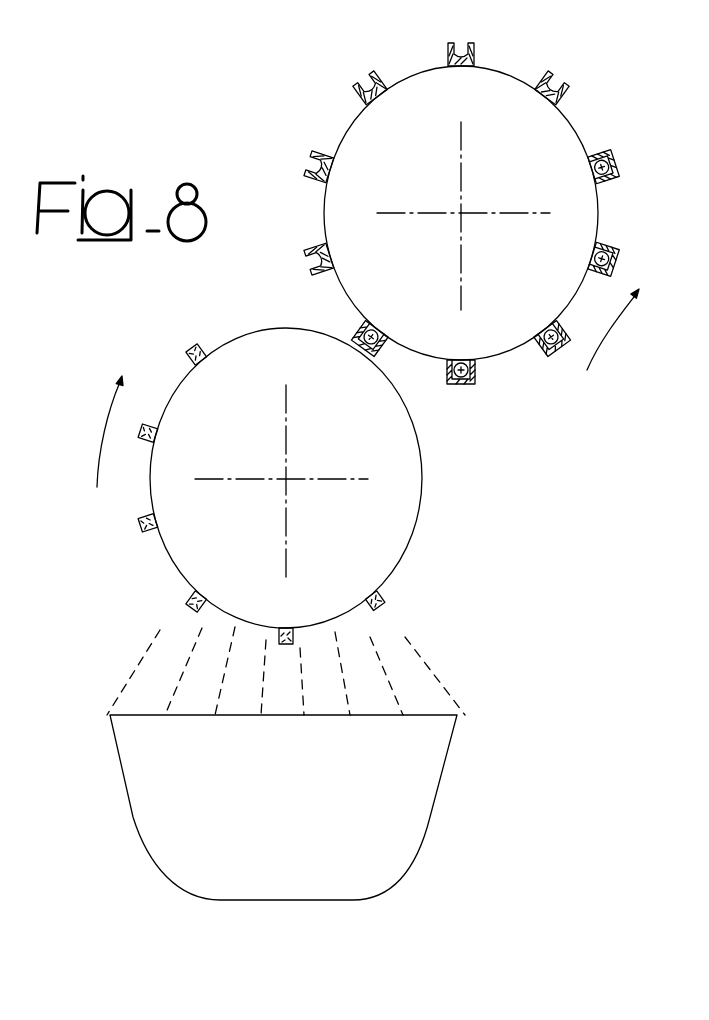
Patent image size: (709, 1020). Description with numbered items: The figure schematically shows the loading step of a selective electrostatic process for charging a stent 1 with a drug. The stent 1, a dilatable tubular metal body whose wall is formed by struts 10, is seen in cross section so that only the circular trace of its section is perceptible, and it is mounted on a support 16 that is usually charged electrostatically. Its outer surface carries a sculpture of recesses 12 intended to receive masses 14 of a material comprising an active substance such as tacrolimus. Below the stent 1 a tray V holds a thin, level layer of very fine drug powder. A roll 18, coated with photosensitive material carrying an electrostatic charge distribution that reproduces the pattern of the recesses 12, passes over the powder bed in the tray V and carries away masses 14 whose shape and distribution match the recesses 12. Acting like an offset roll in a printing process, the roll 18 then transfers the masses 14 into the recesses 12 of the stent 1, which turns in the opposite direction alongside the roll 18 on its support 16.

The stent 1 is at (300, 155).
The struts 10 is at (332, 256).
The recesses 12 is at (368, 80).
The masses 14 is at (629, 167).
The support 16 is at (572, 142).
The roll 18 is at (416, 500).
The tray V is at (428, 820).